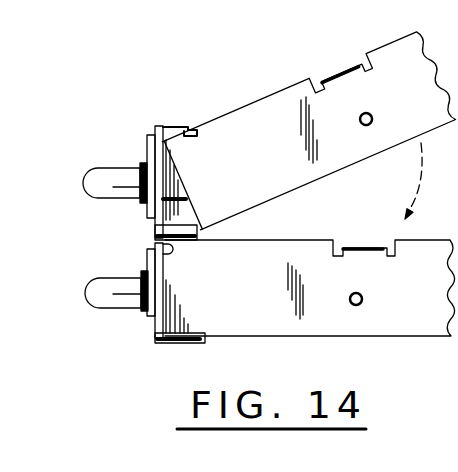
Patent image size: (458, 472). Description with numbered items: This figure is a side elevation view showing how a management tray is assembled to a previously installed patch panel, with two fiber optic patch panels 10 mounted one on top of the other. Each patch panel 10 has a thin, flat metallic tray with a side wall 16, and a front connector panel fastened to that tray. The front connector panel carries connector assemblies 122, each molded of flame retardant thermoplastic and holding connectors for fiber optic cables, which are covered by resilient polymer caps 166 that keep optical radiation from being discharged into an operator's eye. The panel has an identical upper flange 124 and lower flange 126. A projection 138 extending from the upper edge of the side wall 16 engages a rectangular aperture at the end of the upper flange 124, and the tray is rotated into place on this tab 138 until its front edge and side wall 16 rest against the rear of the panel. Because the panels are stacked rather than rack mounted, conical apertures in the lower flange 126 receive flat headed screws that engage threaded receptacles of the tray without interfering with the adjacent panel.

The fiber optic patch panel 10 is at (136, 245).
The side wall 16 is at (283, 182).
The connector assembly 122 is at (147, 312).
The upper flange 124 is at (152, 123).
The lower flange 126 is at (157, 219).
The projection 138 is at (188, 125).
The cap 166 is at (114, 308).